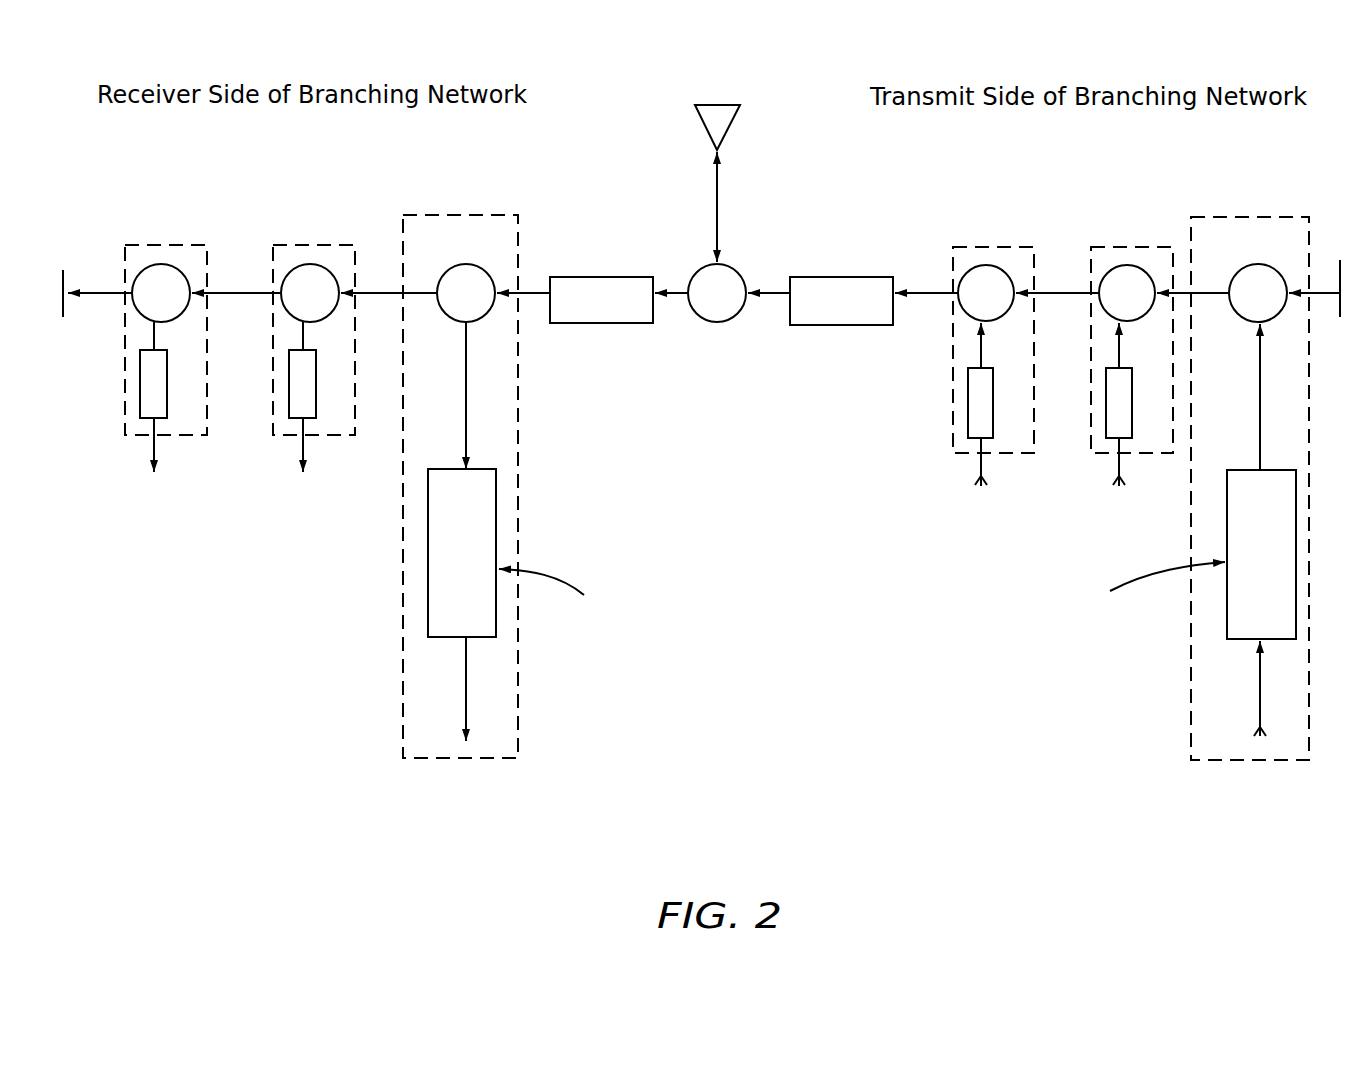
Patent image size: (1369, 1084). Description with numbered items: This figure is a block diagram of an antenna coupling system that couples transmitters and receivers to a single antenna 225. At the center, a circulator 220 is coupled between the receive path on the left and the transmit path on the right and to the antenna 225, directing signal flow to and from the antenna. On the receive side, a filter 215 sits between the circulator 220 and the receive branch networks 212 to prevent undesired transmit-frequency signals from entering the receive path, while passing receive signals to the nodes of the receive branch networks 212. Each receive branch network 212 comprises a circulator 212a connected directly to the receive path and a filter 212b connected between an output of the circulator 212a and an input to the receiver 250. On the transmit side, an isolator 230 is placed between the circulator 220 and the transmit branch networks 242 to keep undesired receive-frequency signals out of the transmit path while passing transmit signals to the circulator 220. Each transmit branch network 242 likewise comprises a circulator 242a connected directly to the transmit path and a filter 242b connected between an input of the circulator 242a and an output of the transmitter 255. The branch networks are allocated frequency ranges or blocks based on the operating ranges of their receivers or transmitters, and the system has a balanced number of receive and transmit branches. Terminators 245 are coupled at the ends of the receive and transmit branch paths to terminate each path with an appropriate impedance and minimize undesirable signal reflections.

The receive branch network 212 is at (459, 497).
The circulator 212a is at (491, 263).
The filter 212b is at (497, 507).
The filter 215 is at (633, 347).
The circulator 220 is at (739, 254).
The antenna 225 is at (717, 165).
The isolator 230 is at (842, 285).
The transmit branch network 242 is at (1094, 495).
The circulator 242a is at (1233, 320).
The filter 242b is at (1243, 641).
The terminator 245 is at (64, 262).
The receiver 250 is at (462, 747).
The transmitter 255 is at (1250, 812).